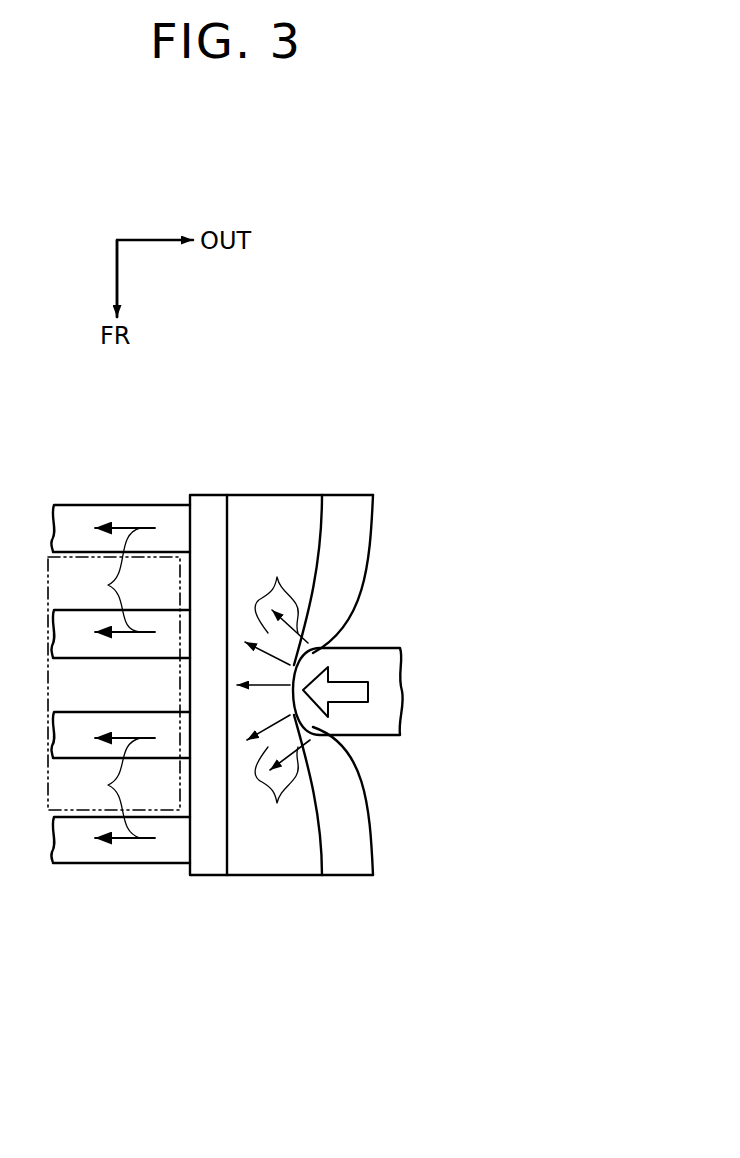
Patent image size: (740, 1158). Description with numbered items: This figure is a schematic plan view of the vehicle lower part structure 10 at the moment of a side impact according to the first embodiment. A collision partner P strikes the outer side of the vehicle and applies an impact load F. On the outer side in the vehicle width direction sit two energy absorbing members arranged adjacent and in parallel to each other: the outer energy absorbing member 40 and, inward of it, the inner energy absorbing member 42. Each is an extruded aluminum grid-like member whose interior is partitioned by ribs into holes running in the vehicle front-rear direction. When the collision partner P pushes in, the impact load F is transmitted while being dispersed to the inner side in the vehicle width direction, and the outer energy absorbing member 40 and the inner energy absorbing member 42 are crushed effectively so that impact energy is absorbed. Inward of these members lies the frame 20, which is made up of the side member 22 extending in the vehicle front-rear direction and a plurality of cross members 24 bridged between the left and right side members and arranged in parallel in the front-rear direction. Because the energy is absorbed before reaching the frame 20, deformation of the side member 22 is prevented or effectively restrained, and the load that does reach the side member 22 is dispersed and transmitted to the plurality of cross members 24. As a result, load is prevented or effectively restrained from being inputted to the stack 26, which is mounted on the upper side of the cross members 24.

The vehicle lower part structure 10 is at (396, 385).
The frame 20 is at (66, 874).
The side member 22 is at (231, 518).
The cross members 24 is at (148, 609).
The stack 26 is at (88, 553).
The outer energy absorbing member 40 is at (357, 866).
The inner energy absorbing member 42 is at (260, 866).
The collision partner P is at (365, 738).
The impact load F is at (352, 680).